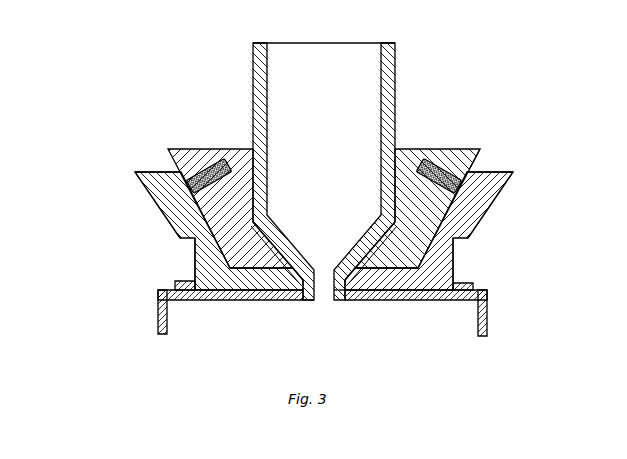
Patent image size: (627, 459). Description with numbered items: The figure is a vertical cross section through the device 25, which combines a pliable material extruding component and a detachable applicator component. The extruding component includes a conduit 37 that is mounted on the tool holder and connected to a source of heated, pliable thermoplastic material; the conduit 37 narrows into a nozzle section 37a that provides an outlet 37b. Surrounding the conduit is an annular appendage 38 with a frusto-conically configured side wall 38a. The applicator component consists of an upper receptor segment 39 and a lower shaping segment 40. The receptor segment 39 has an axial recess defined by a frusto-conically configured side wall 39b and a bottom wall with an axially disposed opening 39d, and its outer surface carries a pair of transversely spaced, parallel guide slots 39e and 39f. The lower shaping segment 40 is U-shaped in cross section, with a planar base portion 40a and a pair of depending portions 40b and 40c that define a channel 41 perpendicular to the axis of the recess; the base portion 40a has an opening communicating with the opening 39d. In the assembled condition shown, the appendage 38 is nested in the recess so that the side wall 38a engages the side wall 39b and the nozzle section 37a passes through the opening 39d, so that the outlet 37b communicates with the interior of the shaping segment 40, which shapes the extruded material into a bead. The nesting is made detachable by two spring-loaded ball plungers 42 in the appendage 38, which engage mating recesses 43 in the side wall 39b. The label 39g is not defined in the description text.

The device 25 is at (240, 78).
The conduit 37 is at (397, 85).
The nozzle section 37a is at (279, 303).
The outlet 37b is at (323, 298).
The annular appendage 38 is at (413, 149).
The frusto-conically configured side wall 38a is at (478, 160).
The upper receptor segment 39 is at (483, 228).
The frusto-conically configured side wall 39b is at (521, 182).
The axially disposed opening 39d is at (337, 302).
The guide slot 39e is at (195, 262).
The guide slot 39f is at (455, 272).
The clamp inclined arm 39g is at (160, 213).
The lower shaping segment 40 is at (492, 318).
The planar base portion 40a is at (193, 302).
The depending portion 40b is at (158, 312).
The depending portion 40c is at (488, 332).
The channel 41 is at (467, 316).
The spring-loaded ball plunger 42 is at (194, 172).
The mating recess 43 is at (156, 198).